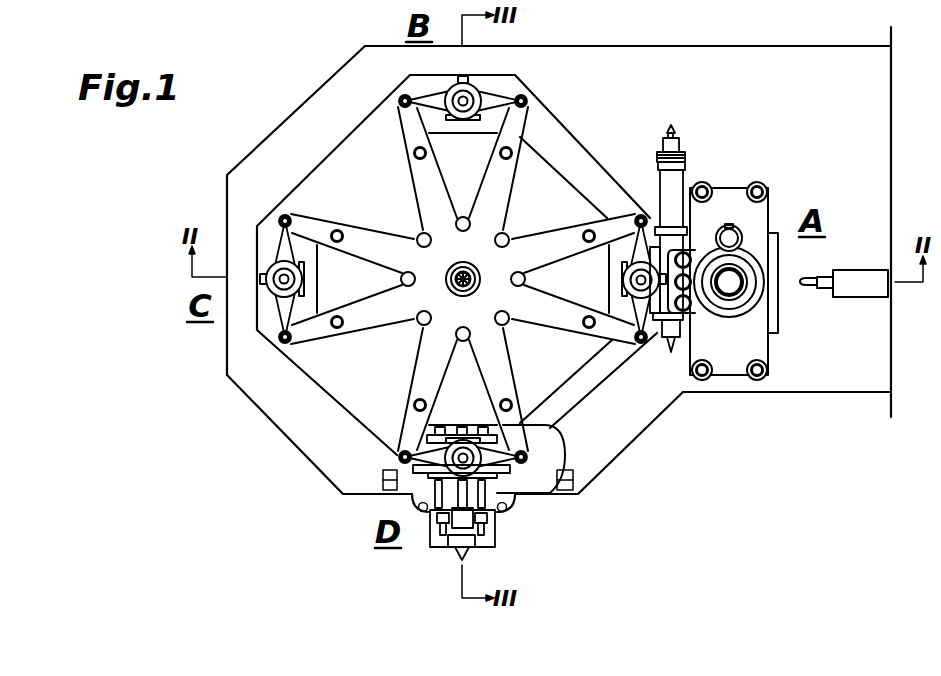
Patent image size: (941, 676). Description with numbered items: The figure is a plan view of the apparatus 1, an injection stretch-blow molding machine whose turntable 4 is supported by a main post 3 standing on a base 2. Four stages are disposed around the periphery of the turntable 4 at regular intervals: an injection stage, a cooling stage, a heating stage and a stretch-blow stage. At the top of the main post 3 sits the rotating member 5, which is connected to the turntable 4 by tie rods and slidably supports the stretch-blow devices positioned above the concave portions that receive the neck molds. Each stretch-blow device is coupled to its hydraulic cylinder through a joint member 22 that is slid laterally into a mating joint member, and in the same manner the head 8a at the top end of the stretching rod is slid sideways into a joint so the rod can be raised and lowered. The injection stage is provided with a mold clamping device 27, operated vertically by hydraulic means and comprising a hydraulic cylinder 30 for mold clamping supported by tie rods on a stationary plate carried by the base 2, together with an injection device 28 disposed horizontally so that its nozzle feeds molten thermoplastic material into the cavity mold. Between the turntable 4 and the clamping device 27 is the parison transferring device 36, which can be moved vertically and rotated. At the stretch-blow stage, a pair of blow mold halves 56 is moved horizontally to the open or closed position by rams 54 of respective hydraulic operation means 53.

The apparatus 1 is at (296, 116).
The base 2 is at (641, 48).
The main post 3 is at (505, 245).
The turntable 4 is at (565, 195).
The rotating member 5 is at (421, 216).
The head 8a is at (470, 96).
The joint member 22 is at (463, 120).
The mold clamping device 27 is at (731, 182).
The injection device 28 is at (858, 292).
The hydraulic cylinder 30 is at (729, 290).
The parison transferring device 36 is at (668, 348).
The hydraulic operation means 53 is at (460, 536).
The ram 54 is at (482, 515).
The blow mold half 56 is at (548, 492).